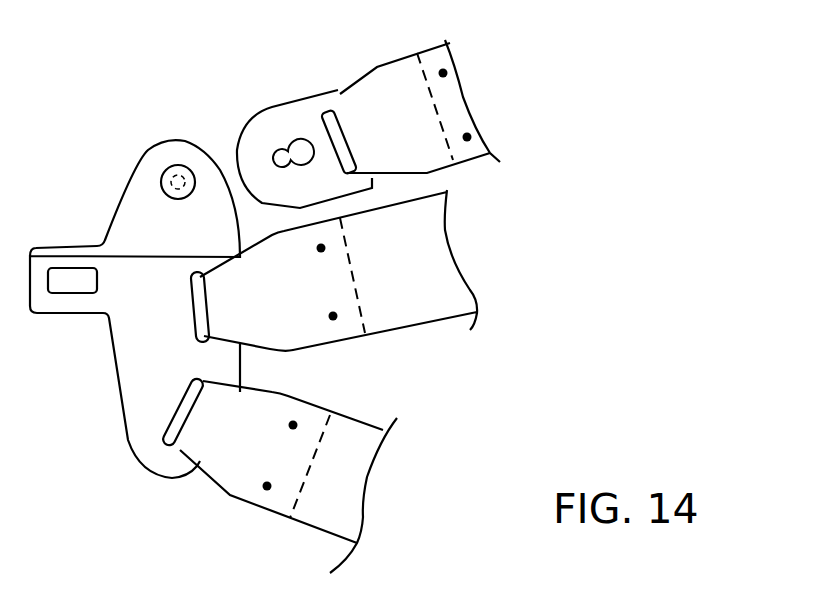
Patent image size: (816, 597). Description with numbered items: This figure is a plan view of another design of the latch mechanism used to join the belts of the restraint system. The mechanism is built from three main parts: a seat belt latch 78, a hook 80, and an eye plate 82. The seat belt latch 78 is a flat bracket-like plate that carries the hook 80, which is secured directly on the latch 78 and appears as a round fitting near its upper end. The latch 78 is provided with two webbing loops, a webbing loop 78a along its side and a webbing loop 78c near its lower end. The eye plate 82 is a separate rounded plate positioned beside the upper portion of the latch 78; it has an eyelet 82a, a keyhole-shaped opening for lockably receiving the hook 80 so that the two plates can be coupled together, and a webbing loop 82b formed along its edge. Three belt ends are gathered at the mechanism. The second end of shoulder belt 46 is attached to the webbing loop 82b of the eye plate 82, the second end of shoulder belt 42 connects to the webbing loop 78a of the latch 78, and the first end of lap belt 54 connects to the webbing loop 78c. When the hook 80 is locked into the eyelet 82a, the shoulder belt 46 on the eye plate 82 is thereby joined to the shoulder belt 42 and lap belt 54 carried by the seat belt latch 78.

The seat belt latch 78 is at (130, 253).
The webbing loop 78a is at (227, 352).
The webbing loop 78c is at (180, 463).
The hook 80 is at (178, 182).
The eye plate 82 is at (278, 107).
The eyelet 82a is at (290, 152).
The webbing loop 82b is at (328, 90).
The shoulder belt 42 is at (438, 278).
The shoulder belt 46 is at (443, 103).
The lap belt 54 is at (340, 508).